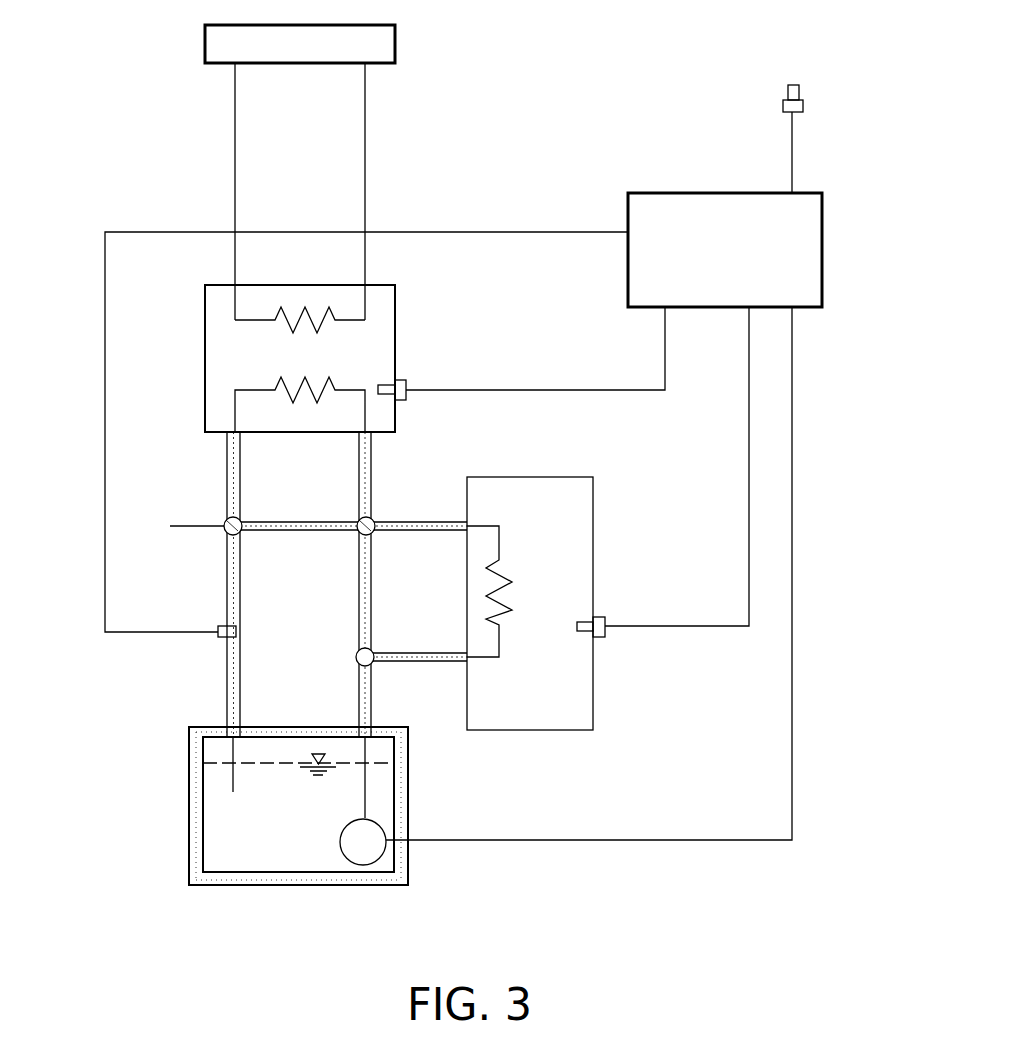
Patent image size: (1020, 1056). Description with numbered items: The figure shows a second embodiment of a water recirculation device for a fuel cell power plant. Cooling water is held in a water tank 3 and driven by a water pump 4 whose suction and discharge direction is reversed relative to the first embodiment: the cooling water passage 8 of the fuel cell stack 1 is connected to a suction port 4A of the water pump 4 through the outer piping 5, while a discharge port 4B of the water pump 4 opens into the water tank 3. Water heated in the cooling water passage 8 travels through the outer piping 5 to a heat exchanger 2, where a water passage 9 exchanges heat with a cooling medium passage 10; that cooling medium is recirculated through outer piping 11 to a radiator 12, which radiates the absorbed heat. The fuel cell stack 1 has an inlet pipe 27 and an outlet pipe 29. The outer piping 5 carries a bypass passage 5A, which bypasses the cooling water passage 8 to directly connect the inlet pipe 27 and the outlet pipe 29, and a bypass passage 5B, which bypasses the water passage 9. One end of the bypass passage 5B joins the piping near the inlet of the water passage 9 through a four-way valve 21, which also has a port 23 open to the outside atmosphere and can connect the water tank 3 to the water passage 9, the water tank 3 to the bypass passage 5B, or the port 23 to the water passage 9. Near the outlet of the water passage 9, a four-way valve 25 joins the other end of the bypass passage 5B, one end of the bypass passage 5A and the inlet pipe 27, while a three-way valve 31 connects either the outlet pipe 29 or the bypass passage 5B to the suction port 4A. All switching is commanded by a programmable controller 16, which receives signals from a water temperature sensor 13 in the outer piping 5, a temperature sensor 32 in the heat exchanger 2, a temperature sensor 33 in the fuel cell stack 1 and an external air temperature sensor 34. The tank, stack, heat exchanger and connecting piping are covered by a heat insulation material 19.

The fuel cell stack 1 is at (593, 712).
The heat exchanger 2 is at (395, 352).
The water tank 3 is at (380, 787).
The water pump 4 is at (383, 826).
The suction port 4A is at (363, 794).
The discharge port 4B is at (340, 843).
The outer piping 5 is at (226, 605).
The bypass passage 5A is at (358, 583).
The bypass passage 5B is at (292, 535).
The cooling water passage 8 is at (512, 586).
The water passage 9 is at (275, 385).
The cooling medium passage 10 is at (235, 305).
The outer piping 11 is at (366, 152).
The radiator 12 is at (397, 45).
The water temperature sensor 13 is at (214, 640).
The controller 16 is at (704, 192).
The heat insulation material 19 is at (262, 727).
The four-way valve 21 is at (224, 520).
The port 23 is at (182, 528).
The four-way valve 25 is at (375, 518).
The inlet pipe 27 is at (440, 533).
The outlet pipe 29 is at (433, 650).
The three-way valve 31 is at (355, 653).
The temperature sensor 32 is at (407, 402).
The temperature sensor 33 is at (603, 617).
The external air temperature sensor 34 is at (788, 95).